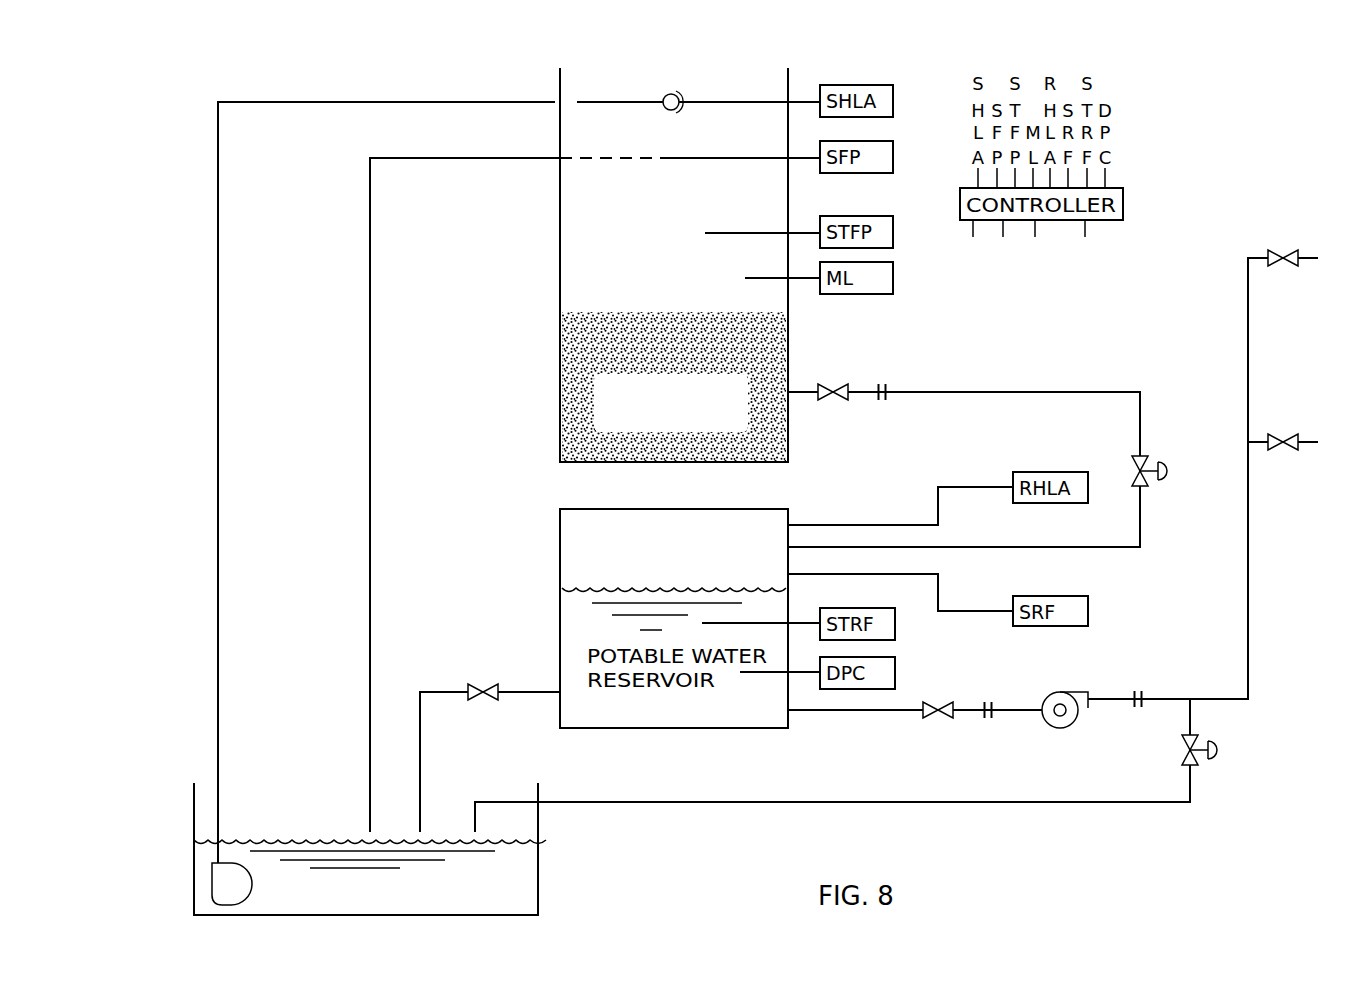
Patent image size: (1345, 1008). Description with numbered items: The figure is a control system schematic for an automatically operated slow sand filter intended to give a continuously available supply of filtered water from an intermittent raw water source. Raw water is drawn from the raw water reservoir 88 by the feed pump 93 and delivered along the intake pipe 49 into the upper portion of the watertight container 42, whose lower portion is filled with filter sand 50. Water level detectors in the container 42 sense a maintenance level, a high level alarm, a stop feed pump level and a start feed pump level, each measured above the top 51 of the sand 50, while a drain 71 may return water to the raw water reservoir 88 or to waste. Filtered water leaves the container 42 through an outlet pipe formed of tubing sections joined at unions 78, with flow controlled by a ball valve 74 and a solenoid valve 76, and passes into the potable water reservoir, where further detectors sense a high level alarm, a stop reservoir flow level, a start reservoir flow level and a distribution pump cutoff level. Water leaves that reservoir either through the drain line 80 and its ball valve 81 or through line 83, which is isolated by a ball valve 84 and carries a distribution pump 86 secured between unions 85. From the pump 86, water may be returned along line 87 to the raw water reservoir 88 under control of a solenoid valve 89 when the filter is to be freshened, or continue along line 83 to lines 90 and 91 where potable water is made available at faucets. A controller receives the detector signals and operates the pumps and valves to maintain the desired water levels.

The watertight container 42 is at (790, 352).
The raw water intake pipe 49 is at (318, 102).
The filter material 50 is at (566, 438).
The top of the sand 51 is at (558, 318).
The drain 71 is at (370, 290).
The ball valve 74 is at (840, 400).
The solenoid valve 76 is at (1170, 468).
The union 78 is at (888, 400).
The drain line 80 is at (420, 692).
The ball valve 81 is at (488, 685).
The distribution line 83 is at (975, 714).
The ball valve 84 is at (934, 716).
The unions 85 is at (985, 700).
The distribution pump 86 is at (1068, 728).
The return line 87 is at (918, 802).
The raw water reservoir 88 is at (538, 893).
The solenoid valve 89 is at (1216, 760).
The line 90 is at (1283, 250).
The line 91 is at (1283, 450).
The feed pump 93 is at (226, 875).